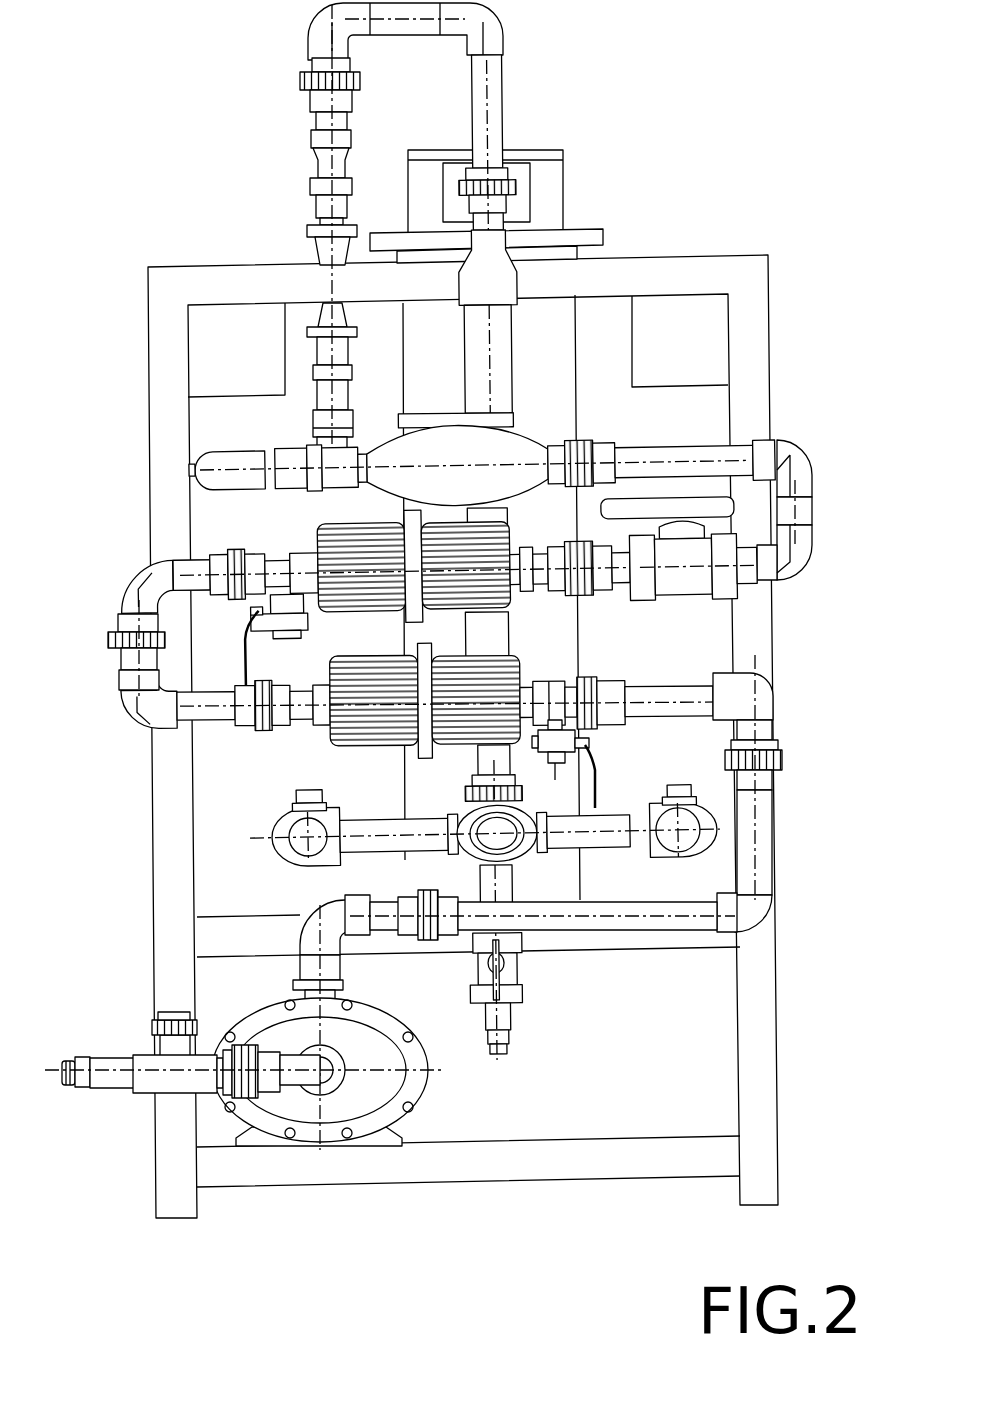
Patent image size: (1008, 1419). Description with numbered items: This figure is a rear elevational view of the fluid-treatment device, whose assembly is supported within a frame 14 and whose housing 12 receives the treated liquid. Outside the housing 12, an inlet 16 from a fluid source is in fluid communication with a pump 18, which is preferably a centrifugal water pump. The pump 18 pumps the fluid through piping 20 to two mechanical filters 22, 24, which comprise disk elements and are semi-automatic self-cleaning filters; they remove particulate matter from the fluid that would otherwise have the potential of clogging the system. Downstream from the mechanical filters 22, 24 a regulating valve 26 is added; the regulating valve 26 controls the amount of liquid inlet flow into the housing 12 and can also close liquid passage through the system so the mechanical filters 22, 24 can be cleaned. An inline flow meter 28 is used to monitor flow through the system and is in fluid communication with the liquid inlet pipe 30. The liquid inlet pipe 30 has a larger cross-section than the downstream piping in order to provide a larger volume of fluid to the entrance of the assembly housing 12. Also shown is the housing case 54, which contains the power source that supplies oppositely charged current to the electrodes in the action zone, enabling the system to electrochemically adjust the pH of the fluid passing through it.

The housing 12 is at (580, 330).
The frame 14 is at (748, 312).
The inlet 16 is at (62, 1075).
The pump 18 is at (382, 1085).
The piping 20 is at (605, 922).
The mechanical filter 22 is at (330, 742).
The mechanical filter 24 is at (318, 545).
The regulating valve 26 is at (683, 583).
The inline flow meter 28 is at (310, 233).
The liquid inlet pipe 30 is at (500, 373).
The housing case 54 is at (553, 148).